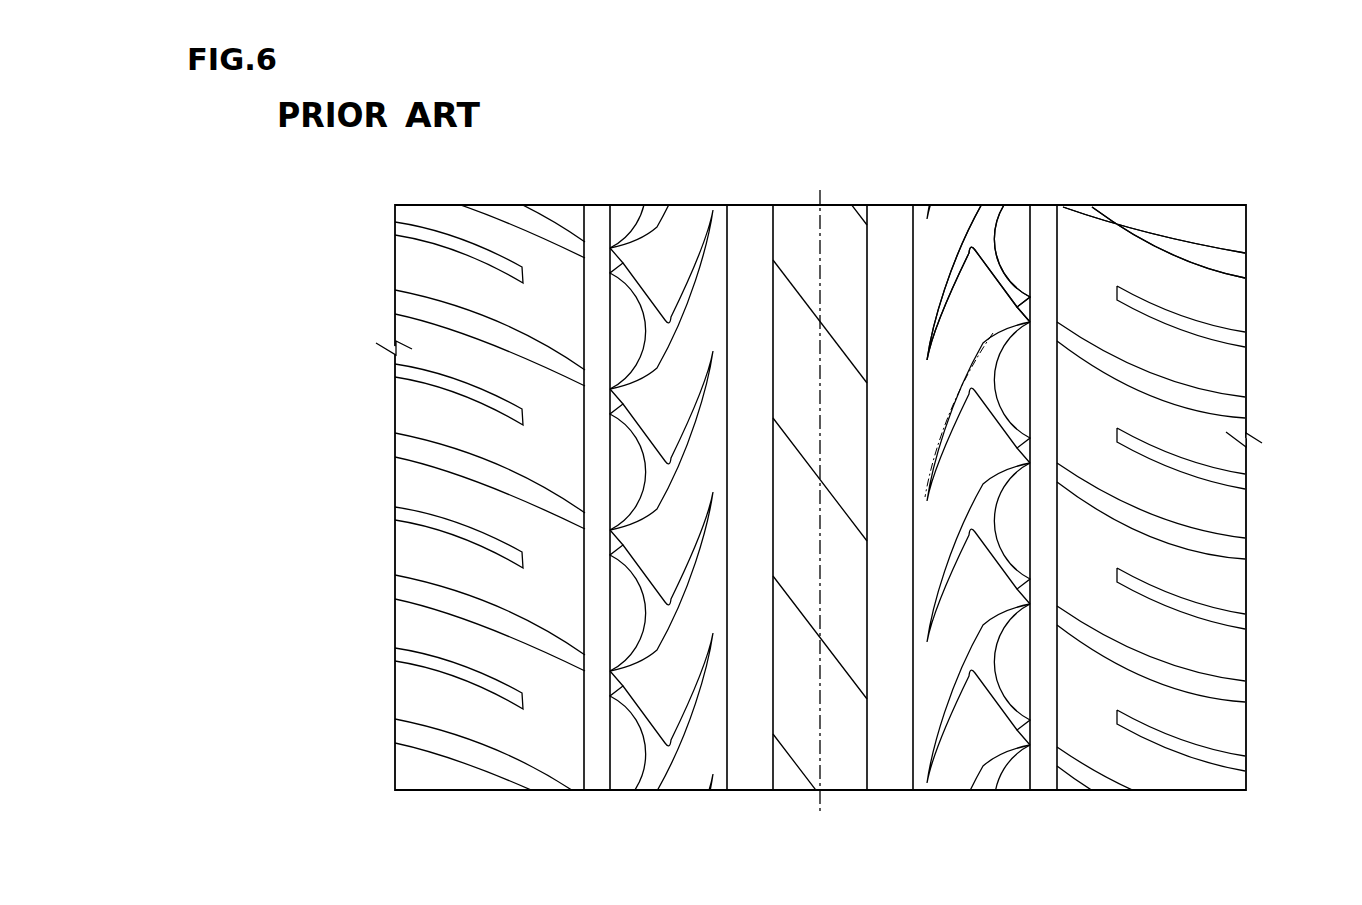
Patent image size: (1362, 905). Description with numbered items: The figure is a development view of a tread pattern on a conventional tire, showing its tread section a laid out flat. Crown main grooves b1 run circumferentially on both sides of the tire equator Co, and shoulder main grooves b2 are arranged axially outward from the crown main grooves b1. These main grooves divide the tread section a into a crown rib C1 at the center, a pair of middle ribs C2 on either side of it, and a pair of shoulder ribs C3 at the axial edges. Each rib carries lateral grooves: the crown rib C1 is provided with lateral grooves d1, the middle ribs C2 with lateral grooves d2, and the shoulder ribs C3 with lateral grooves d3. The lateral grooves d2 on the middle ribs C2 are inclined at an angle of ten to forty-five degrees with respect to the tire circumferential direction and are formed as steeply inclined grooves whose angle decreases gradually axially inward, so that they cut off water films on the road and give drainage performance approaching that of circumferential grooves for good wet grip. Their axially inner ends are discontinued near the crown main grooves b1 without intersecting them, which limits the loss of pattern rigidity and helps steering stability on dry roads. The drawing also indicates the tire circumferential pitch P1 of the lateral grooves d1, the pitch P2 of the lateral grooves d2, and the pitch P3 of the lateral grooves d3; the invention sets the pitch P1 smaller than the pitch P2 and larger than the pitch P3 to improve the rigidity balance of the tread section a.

The tread section a is at (1265, 172).
The crown main grooves b1 is at (745, 237).
The shoulder main grooves b2 is at (597, 237).
The crown rib C1 is at (773, 800).
The middle ribs C2 is at (727, 800).
The shoulder ribs C3 is at (584, 800).
The tire equator Co is at (821, 489).
The lateral grooves d1 is at (793, 250).
The lateral grooves d2 is at (945, 250).
The lateral grooves d3 is at (1165, 237).
The tire circumferential pitch P1 is at (745, 260).
The tire circumferential pitch P2 is at (557, 402).
The tire circumferential pitch P3 is at (348, 445).